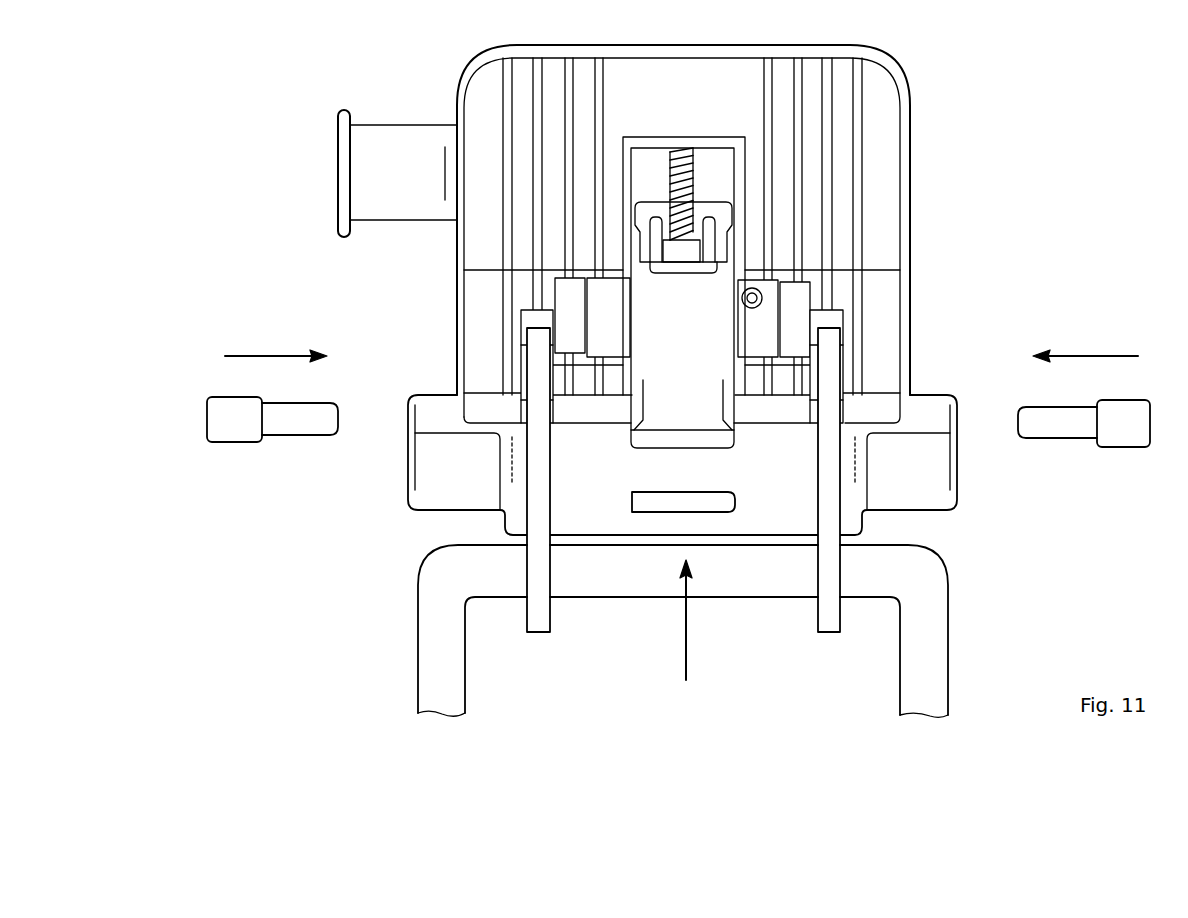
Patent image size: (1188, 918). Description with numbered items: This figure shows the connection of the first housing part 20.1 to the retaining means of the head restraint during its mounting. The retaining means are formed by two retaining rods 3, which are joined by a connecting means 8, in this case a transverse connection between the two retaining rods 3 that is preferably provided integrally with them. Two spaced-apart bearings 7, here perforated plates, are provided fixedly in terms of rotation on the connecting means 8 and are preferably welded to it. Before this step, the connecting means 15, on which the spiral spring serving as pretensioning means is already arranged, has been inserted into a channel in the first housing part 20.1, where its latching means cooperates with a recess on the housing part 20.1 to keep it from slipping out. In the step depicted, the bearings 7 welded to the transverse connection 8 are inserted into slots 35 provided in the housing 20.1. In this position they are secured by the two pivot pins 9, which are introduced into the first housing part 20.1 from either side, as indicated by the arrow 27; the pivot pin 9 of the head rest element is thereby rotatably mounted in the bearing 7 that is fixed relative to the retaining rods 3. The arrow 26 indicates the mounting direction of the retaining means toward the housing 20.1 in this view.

The first housing part 20.1 is at (882, 120).
The connecting means 15 is at (727, 212).
The slots 35 is at (535, 440).
The bearings 7 is at (527, 538).
The retaining rods 3 is at (441, 640).
The connecting means 8 is at (770, 577).
The pivot pins 9 is at (290, 420).
The arrow 27 is at (268, 352).
The mounting direction 26 is at (686, 640).